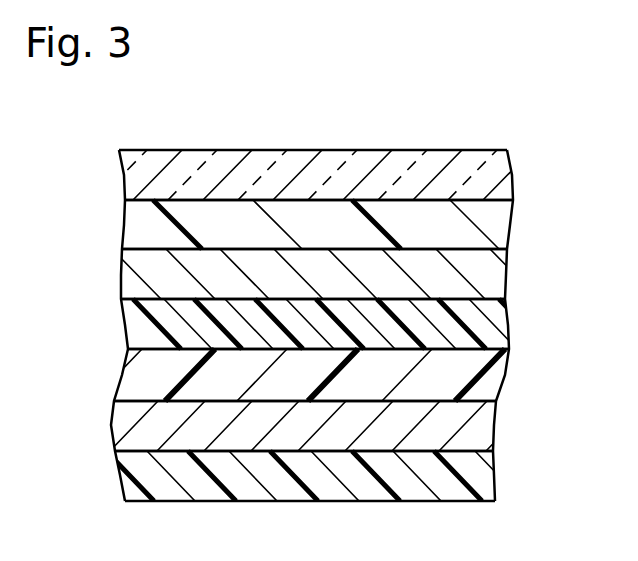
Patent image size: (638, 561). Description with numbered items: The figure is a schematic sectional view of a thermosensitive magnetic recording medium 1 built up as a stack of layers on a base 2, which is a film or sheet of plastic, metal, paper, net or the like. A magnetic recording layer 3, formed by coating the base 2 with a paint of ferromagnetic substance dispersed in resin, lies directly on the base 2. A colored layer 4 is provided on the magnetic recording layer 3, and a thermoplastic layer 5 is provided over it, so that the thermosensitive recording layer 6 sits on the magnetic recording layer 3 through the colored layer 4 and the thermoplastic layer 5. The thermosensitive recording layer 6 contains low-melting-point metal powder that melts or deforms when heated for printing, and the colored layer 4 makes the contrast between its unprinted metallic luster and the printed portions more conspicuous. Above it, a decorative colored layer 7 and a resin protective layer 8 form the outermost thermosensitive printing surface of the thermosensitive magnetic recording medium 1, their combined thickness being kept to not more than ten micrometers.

The thermosensitive magnetic recording medium 1 is at (147, 115).
The base 2 is at (492, 474).
The magnetic recording layer 3 is at (492, 423).
The colored layer 4 is at (495, 372).
The thermoplastic layer 5 is at (500, 322).
The thermosensitive recording layer 6 is at (497, 272).
The colored layer 7 is at (500, 227).
The protective layer 8 is at (500, 181).